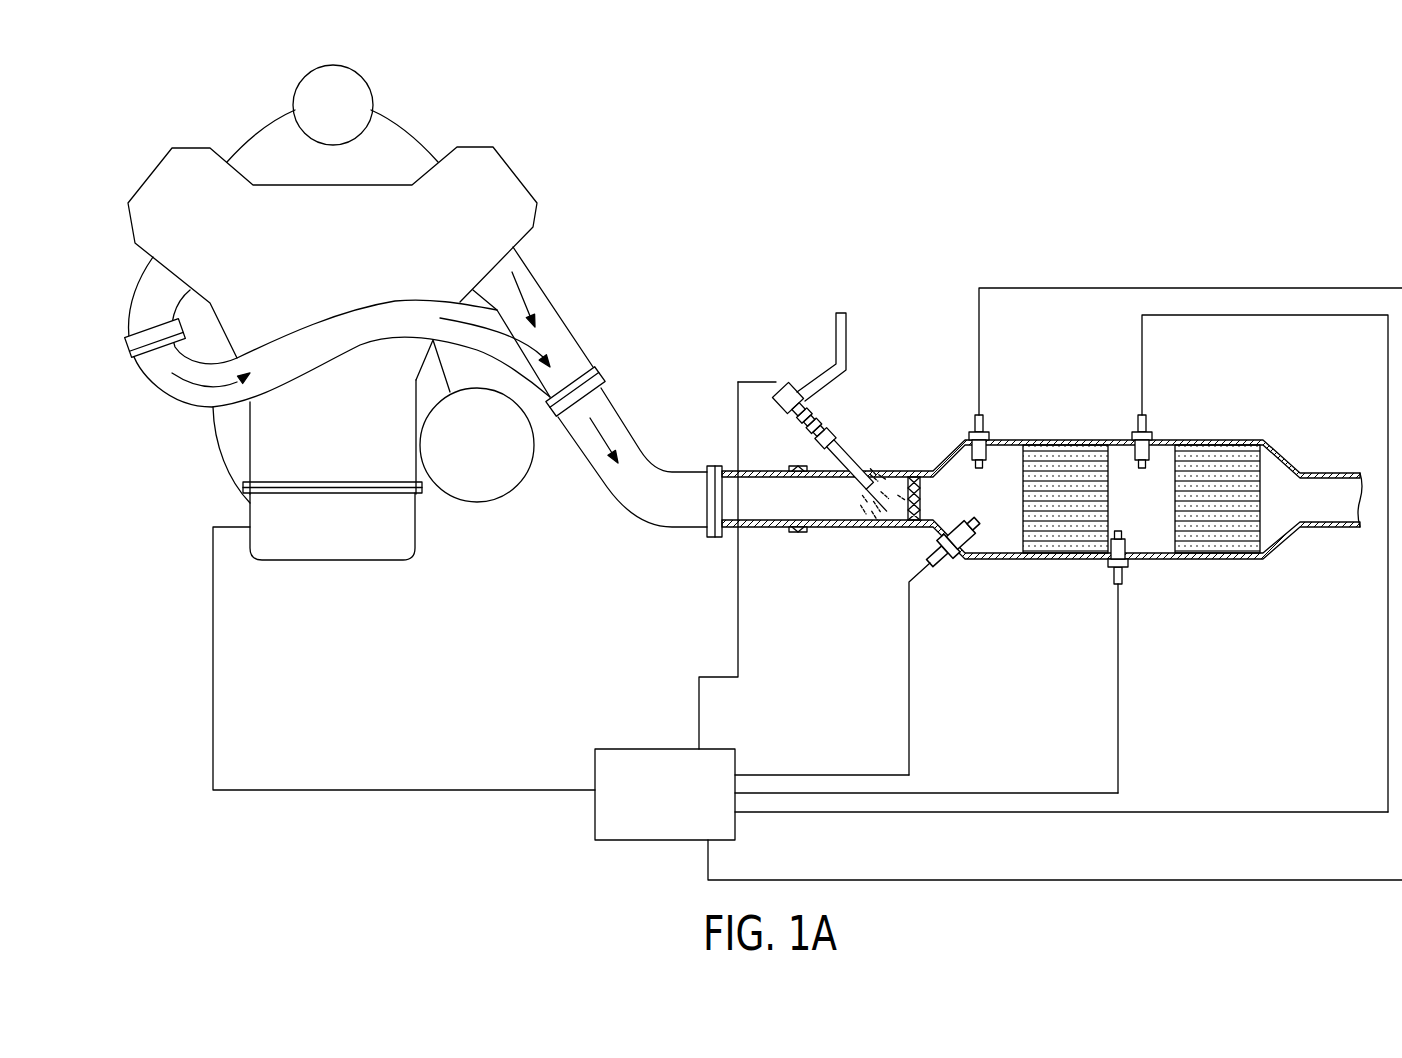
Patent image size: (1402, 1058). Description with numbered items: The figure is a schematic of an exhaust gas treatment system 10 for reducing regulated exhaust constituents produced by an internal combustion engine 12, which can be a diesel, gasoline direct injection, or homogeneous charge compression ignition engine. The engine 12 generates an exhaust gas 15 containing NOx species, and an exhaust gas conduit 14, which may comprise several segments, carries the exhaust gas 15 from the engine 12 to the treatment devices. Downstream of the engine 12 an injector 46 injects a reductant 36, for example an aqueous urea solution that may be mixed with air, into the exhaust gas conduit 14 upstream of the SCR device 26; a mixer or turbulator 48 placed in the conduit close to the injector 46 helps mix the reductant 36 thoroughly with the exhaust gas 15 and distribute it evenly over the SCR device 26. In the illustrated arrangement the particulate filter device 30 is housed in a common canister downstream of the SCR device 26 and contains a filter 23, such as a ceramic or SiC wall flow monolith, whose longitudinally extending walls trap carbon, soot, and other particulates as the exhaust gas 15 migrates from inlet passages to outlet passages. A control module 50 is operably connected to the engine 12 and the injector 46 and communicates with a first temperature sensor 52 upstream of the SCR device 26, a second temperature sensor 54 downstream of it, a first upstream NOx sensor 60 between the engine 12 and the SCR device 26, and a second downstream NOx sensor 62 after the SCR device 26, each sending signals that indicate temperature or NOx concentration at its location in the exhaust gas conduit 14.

The exhaust gas treatment system 10 is at (1258, 225).
The internal combustion engine 12 is at (476, 146).
The exhaust gas conduit 14 is at (557, 320).
The exhaust gas 15 is at (615, 421).
The filter 23 is at (1263, 515).
The SCR device 26 is at (1082, 449).
The particulate filter device 30 is at (1235, 449).
The reductant 36 is at (883, 473).
The injector 46 is at (832, 418).
The mixer or turbulator 48 is at (920, 498).
The control module 50 is at (608, 748).
The first temperature sensor 52 is at (950, 545).
The second temperature sensor 54 is at (1130, 562).
The first upstream NOx sensor 60 is at (990, 437).
The second downstream NOx sensor 62 is at (1150, 437).